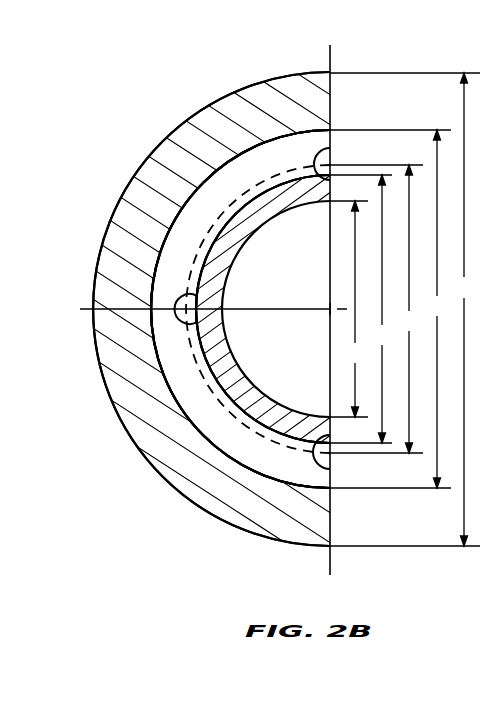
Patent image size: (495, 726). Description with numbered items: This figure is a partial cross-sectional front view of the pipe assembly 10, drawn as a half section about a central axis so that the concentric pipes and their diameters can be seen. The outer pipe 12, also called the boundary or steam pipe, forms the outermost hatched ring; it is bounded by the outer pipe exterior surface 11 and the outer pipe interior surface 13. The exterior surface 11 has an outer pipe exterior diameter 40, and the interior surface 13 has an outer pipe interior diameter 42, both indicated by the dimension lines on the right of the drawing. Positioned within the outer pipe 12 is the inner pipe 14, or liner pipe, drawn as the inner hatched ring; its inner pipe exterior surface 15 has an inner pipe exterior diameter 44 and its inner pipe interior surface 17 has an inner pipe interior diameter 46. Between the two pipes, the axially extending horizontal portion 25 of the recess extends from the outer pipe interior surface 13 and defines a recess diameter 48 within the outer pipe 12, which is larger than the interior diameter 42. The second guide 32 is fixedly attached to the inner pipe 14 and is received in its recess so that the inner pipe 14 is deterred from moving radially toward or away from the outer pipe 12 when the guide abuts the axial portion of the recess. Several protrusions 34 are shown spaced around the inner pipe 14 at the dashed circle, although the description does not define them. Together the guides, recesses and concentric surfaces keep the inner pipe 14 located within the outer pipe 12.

The pipe assembly 10 is at (95, 108).
The outer pipe exterior surface 11 is at (268, 177).
The outer pipe 12 is at (205, 120).
The outer pipe interior surface 13 is at (255, 140).
The inner pipe 14 is at (265, 395).
The inner pipe exterior surface 15 is at (285, 410).
The inner pipe interior surface 17 is at (330, 486).
The axially extending horizontal portion 25 is at (175, 205).
The second guide 32 is at (172, 260).
The retention lugs 34 is at (316, 158).
The outer pipe exterior diameter 40 is at (405, 309).
The outer pipe interior diameter 42 is at (376, 309).
The inner pipe exterior diameter 44 is at (361, 309).
The inner pipe interior diameter 46 is at (349, 309).
The recess diameter 48 is at (390, 309).